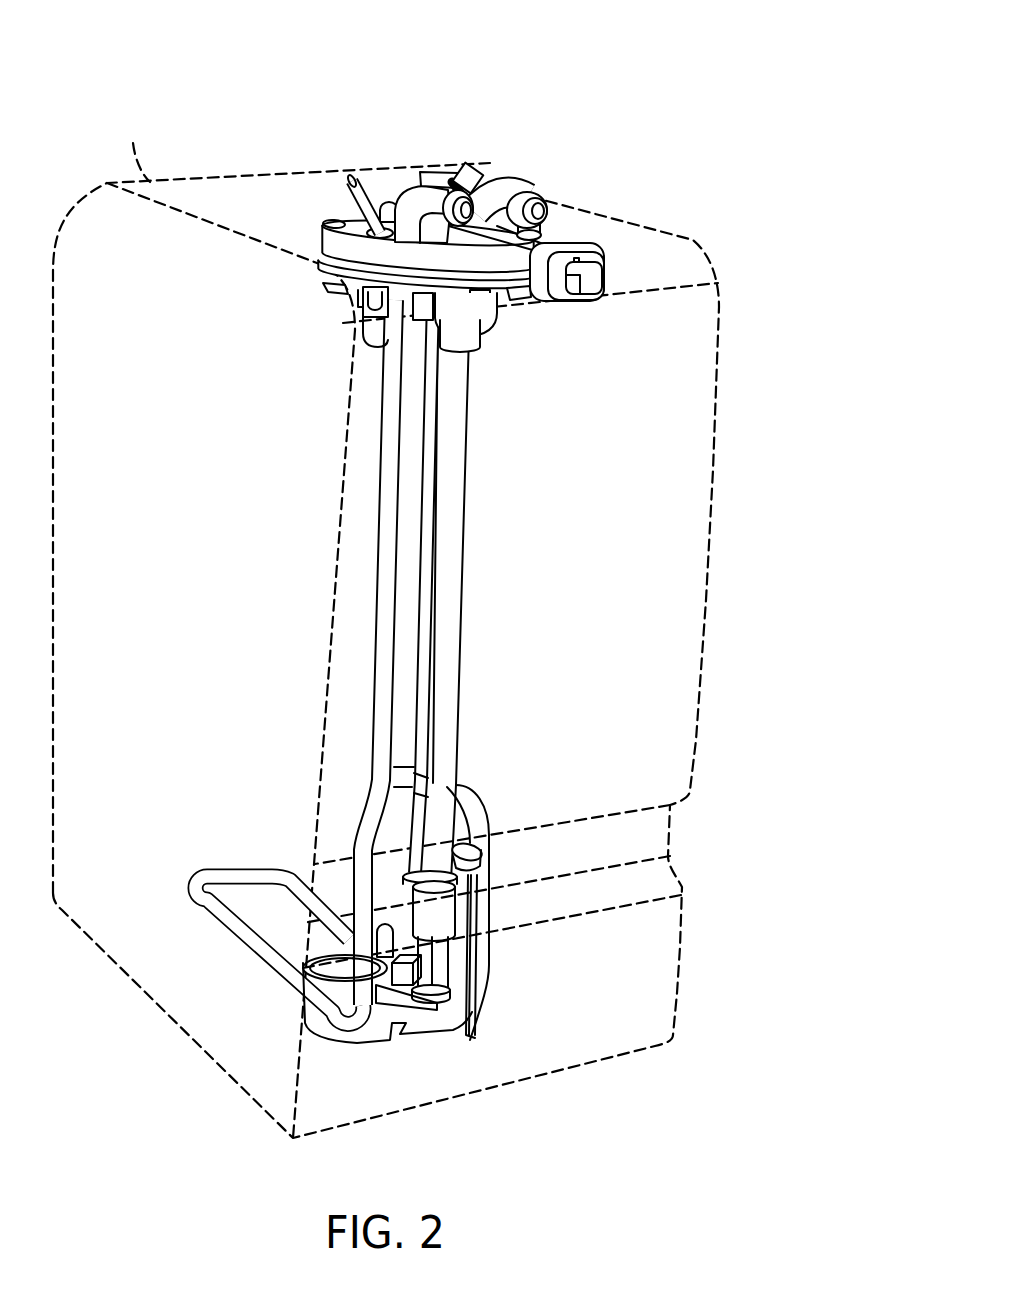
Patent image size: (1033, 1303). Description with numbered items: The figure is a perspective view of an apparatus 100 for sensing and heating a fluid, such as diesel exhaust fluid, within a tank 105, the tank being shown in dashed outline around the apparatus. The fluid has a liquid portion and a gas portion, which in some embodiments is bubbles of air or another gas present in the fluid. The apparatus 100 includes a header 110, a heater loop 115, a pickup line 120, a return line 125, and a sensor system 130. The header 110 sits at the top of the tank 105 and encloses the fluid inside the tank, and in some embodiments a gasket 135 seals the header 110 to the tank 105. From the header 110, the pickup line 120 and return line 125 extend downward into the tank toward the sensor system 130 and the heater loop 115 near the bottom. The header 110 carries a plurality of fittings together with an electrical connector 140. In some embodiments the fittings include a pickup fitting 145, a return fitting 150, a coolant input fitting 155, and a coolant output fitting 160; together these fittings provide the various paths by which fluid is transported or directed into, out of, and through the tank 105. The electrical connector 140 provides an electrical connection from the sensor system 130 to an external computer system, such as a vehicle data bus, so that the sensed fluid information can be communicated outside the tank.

The apparatus 100 is at (610, 70).
The tank 105 is at (386, 625).
The header 110 is at (322, 212).
The heater loop 115 is at (242, 866).
The pickup line 120 is at (421, 513).
The return line 125 is at (373, 340).
The sensor system 130 is at (518, 1003).
The gasket 135 is at (320, 270).
The electrical connector 140 is at (605, 268).
The pickup fitting 145 is at (474, 172).
The return fitting 150 is at (364, 192).
The coolant input fitting 155 is at (520, 190).
The coolant output fitting 160 is at (418, 196).